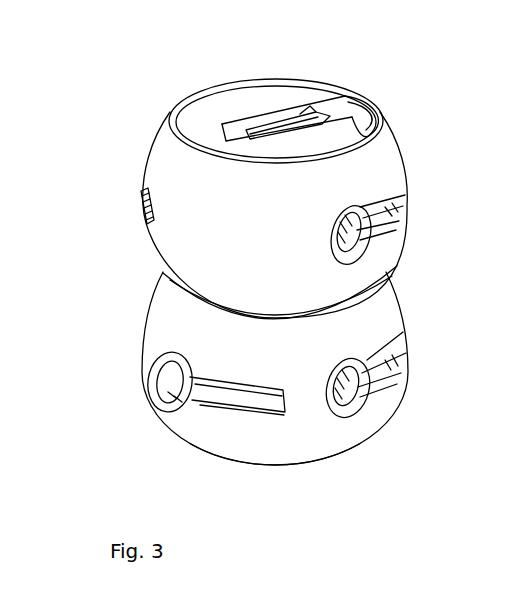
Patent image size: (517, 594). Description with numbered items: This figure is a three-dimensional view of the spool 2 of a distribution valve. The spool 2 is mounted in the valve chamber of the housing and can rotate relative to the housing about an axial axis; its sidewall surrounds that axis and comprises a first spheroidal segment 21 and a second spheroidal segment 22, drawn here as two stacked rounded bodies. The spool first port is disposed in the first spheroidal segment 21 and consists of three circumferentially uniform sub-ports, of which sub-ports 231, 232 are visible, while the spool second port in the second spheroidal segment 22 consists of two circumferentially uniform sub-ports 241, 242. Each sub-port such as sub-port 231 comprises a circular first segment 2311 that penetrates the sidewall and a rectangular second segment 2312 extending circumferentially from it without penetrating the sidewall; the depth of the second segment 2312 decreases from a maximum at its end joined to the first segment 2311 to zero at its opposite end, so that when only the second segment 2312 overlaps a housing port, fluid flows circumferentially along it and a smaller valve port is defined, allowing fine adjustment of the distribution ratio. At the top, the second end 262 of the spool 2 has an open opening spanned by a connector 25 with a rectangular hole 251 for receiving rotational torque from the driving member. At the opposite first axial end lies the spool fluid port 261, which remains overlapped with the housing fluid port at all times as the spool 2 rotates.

The spool 2 is at (157, 168).
The first spheroidal segment 21 is at (167, 337).
The second spheroidal segment 22 is at (160, 237).
The sub-port 231 is at (150, 366).
The first segment 2311 is at (188, 384).
The second segment 2312 is at (217, 397).
The sub-port 232 is at (368, 360).
The sub-port 241 is at (372, 225).
The sub-port 242 is at (143, 195).
The connector 25 is at (333, 107).
The rectangular hole 251 is at (262, 104).
The spool fluid port 261 is at (199, 452).
The second end 262 is at (190, 108).